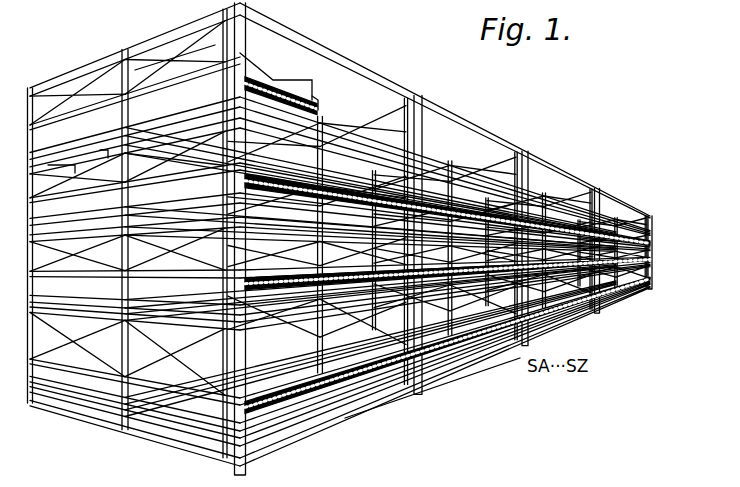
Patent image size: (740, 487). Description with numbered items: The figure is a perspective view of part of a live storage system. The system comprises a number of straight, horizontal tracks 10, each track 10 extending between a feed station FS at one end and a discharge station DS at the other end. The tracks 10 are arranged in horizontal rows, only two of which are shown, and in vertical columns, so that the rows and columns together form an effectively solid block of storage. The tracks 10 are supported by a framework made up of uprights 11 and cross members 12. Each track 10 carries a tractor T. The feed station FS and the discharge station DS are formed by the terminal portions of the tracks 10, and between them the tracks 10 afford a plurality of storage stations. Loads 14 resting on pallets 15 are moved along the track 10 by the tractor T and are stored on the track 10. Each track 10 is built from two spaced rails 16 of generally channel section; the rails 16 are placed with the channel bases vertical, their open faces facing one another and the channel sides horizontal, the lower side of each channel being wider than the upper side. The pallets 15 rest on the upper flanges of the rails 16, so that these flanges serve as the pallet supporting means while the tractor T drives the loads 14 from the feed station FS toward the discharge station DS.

The track 10 is at (440, 157).
The upright 11 is at (243, 32).
The cross member 12 is at (340, 115).
The load 14 is at (287, 78).
The pallet 15 is at (314, 98).
The rail 16 is at (105, 157).
The tractor T is at (140, 58).
The discharge station DS is at (332, 403).
The feed station FS is at (634, 298).